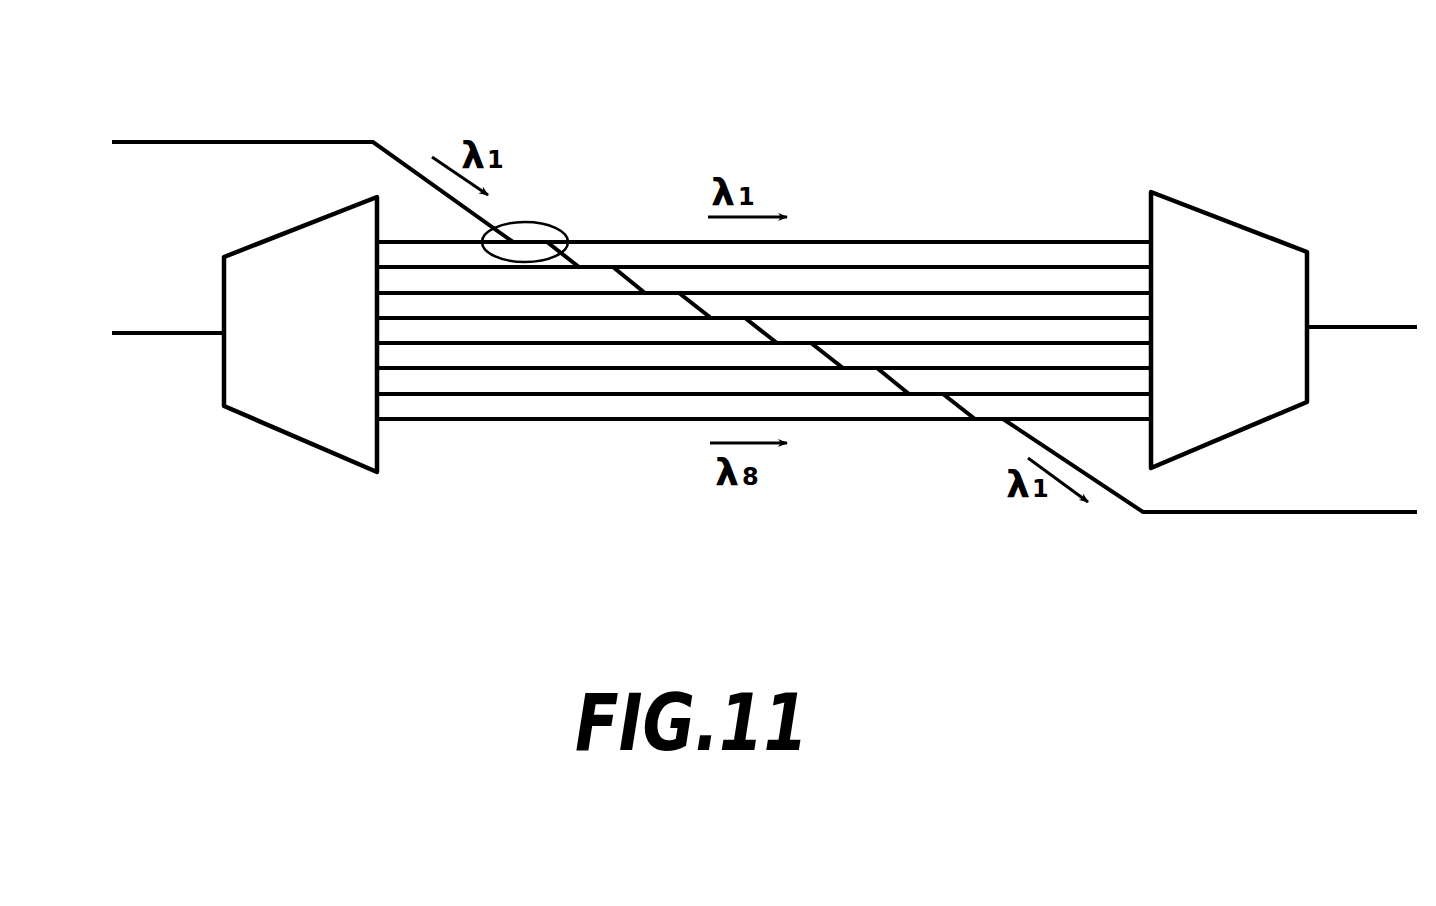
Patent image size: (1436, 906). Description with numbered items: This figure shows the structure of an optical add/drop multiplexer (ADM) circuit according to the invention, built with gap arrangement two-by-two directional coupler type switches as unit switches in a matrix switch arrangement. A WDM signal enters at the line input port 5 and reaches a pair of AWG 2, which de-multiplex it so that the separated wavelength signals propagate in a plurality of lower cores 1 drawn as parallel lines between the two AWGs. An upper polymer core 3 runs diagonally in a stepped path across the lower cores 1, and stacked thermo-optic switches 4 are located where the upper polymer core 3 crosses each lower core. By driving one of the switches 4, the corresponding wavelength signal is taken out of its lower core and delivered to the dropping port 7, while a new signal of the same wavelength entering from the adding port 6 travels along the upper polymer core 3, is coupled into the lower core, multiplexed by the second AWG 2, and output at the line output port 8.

The lower cores 1 is at (412, 238).
The pair of AWG 2 is at (280, 407).
The upper polymer core 3 is at (760, 315).
The stacked thermo-optic switches 4 is at (517, 222).
The line input port 5 is at (187, 307).
The adding port 6 is at (187, 118).
The dropping port 7 is at (1417, 535).
The line output port 8 is at (1417, 303).